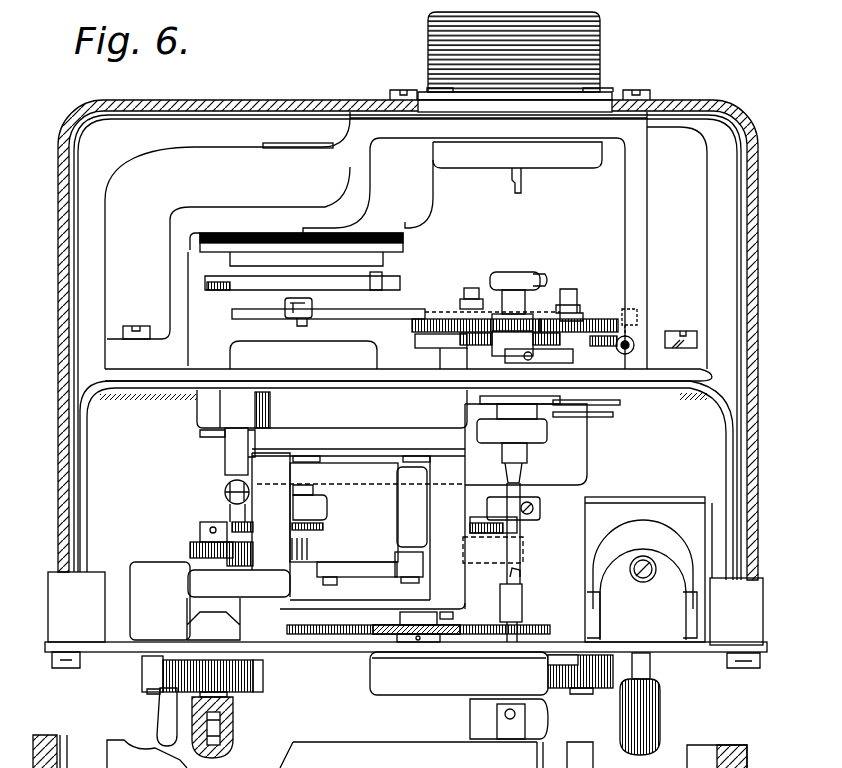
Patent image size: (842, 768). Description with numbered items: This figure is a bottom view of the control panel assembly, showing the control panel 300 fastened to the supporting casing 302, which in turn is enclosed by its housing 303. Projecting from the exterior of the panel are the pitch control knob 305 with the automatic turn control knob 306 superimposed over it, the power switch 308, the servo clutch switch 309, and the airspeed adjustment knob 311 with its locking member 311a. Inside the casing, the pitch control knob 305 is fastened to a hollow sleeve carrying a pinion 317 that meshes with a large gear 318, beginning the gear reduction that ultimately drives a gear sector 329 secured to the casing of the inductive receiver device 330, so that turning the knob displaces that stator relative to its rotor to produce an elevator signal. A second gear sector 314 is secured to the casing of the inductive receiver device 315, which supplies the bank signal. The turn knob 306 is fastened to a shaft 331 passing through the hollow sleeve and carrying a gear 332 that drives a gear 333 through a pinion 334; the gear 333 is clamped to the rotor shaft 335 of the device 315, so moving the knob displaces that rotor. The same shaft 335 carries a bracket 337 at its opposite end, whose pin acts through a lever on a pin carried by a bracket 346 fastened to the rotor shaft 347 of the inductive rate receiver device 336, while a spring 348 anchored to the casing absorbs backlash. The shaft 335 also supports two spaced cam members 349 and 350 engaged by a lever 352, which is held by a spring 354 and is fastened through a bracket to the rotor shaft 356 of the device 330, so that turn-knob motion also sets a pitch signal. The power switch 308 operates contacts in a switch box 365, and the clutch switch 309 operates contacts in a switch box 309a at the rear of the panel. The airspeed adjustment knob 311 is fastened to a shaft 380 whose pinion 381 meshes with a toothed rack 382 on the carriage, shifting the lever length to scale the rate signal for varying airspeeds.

The control panel 300 is at (318, 649).
The supporting casing 302 is at (88, 502).
The housing 303 is at (64, 378).
The pitch control knob 305 is at (583, 677).
The automatic turn control knob 306 is at (483, 714).
The power switch 308 is at (170, 712).
The servo clutch switch 309 is at (642, 720).
The switch box 309a is at (660, 617).
The airspeed adjustment knob 311 is at (231, 730).
The locking member 311a is at (296, 702).
The gear sector 314 is at (445, 336).
The inductive receiver device 315 is at (557, 463).
The pinion 317 is at (525, 622).
The large gear 318 is at (352, 629).
The gear sector 329 is at (380, 286).
The inductive receiver device 330 is at (310, 265).
The shaft 331 is at (518, 574).
The gear 332 is at (515, 343).
The gear 333 is at (433, 319).
The pinion 334 is at (488, 339).
The rotor shaft 335 is at (286, 305).
The inductive rate receiver device 336 is at (322, 367).
The bracket 337 is at (527, 514).
The bracket 346 is at (310, 510).
The rotor shaft 347 is at (298, 488).
The spring 348 is at (226, 488).
The cam member 349 is at (600, 286).
The cam member 350 is at (470, 318).
The lever 352 is at (388, 313).
The spring 354 is at (638, 341).
The rotor shaft 356 is at (287, 316).
The switch box 365 is at (210, 546).
The shaft 380 is at (205, 523).
The pinion 381 is at (194, 551).
The toothed rack 382 is at (360, 530).